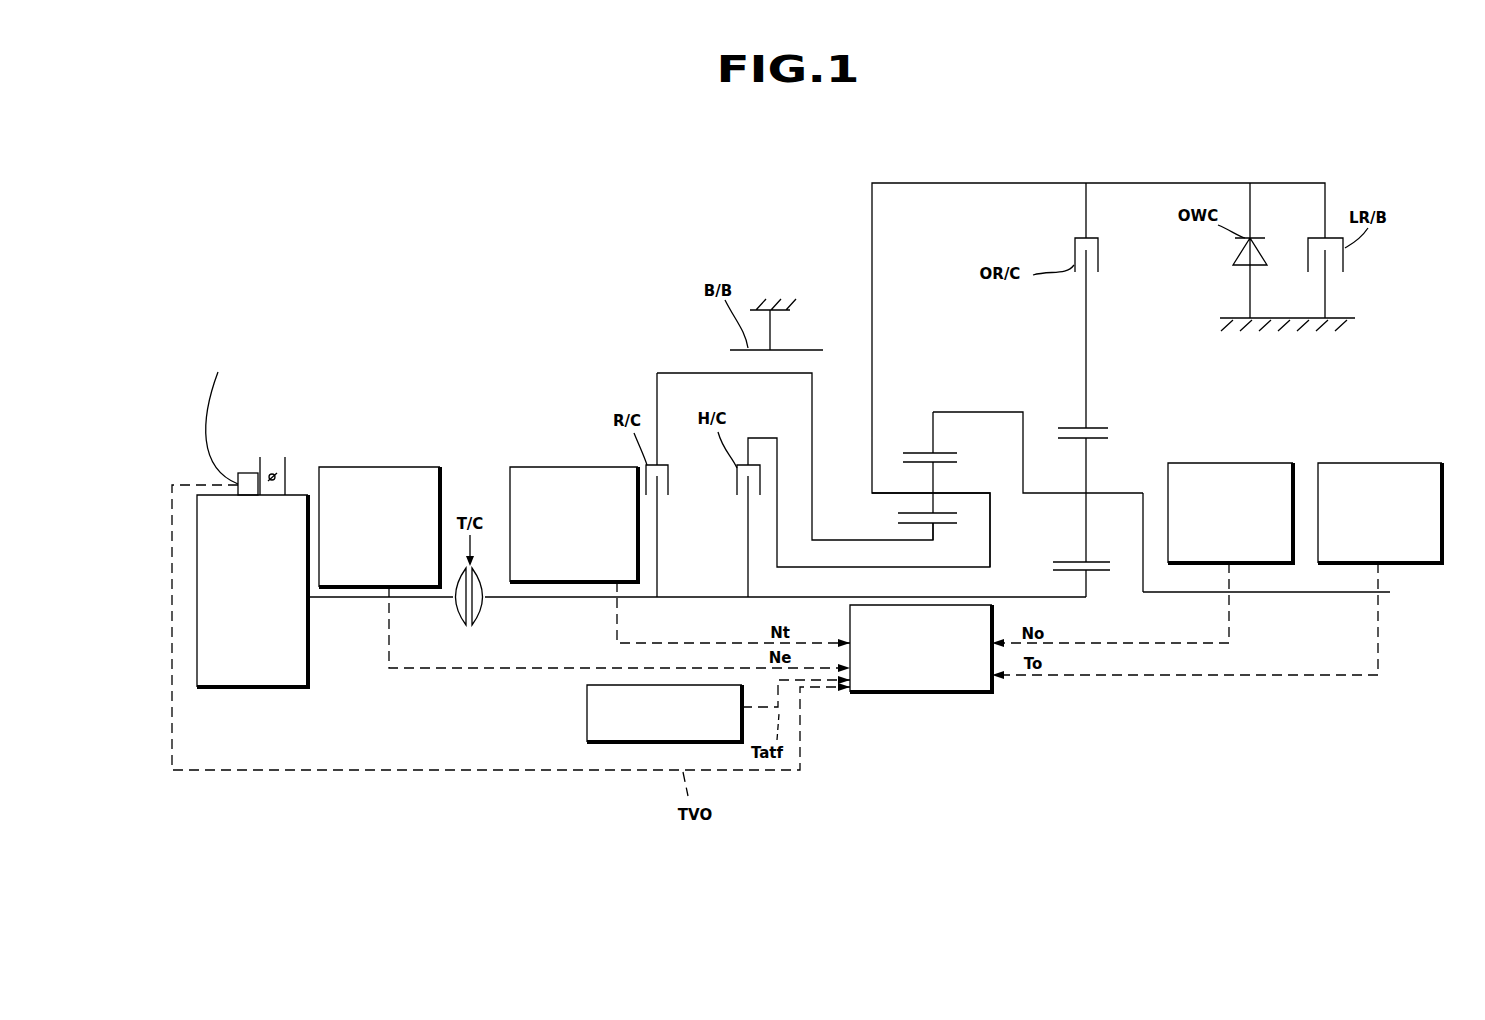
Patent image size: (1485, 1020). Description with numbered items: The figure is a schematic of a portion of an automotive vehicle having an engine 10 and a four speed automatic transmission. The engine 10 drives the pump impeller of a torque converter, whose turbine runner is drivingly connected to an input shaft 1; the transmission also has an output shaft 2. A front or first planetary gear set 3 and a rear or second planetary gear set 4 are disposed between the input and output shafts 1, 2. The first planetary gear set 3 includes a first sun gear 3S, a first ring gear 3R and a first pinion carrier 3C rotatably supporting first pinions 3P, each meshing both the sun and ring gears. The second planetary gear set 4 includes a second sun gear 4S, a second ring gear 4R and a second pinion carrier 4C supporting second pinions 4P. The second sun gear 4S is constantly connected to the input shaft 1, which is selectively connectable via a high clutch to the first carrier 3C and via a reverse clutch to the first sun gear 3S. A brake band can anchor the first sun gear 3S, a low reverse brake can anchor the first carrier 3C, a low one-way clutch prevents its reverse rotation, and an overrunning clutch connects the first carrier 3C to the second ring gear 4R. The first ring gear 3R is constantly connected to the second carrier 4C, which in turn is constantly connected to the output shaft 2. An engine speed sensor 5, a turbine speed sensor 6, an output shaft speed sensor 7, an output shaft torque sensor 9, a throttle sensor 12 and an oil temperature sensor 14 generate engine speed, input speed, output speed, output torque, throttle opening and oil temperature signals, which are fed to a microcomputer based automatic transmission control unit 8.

The input shaft 1 is at (643, 598).
The output shaft 2 is at (1255, 595).
The first planetary gear set 3 is at (995, 469).
The first ring gear 3R is at (942, 455).
The first pinions 3P is at (935, 484).
The first sun gear 3S is at (940, 523).
The first pinion carrier 3C is at (878, 493).
The second planetary gear set 4 is at (1095, 499).
The second ring gear 4R is at (1100, 432).
The second pinions 4P is at (1083, 525).
The second sun gear 4S is at (1100, 576).
The second pinion carrier 4C is at (1121, 493).
The engine speed sensor 5 is at (397, 467).
The turbine speed sensor 6 is at (565, 467).
The output shaft speed sensor 7 is at (1238, 463).
The automatic transmission control unit 8 is at (992, 622).
The output shaft torque sensor 9 is at (1357, 463).
The engine 10 is at (255, 687).
The throttle sensor 12 is at (250, 473).
The oil temperature sensor 14 is at (587, 712).